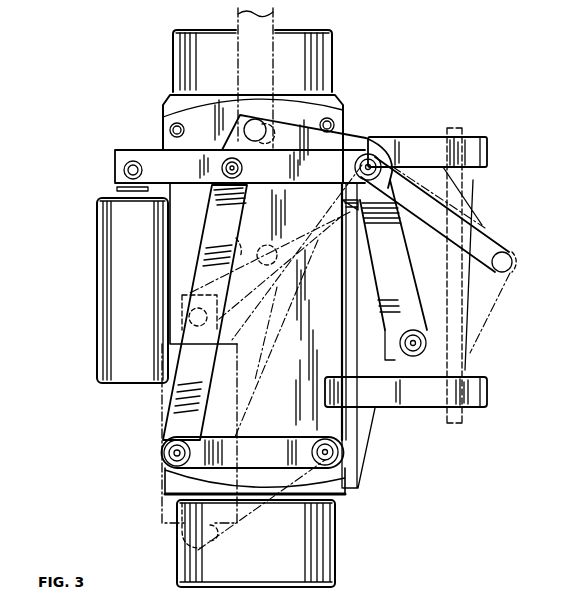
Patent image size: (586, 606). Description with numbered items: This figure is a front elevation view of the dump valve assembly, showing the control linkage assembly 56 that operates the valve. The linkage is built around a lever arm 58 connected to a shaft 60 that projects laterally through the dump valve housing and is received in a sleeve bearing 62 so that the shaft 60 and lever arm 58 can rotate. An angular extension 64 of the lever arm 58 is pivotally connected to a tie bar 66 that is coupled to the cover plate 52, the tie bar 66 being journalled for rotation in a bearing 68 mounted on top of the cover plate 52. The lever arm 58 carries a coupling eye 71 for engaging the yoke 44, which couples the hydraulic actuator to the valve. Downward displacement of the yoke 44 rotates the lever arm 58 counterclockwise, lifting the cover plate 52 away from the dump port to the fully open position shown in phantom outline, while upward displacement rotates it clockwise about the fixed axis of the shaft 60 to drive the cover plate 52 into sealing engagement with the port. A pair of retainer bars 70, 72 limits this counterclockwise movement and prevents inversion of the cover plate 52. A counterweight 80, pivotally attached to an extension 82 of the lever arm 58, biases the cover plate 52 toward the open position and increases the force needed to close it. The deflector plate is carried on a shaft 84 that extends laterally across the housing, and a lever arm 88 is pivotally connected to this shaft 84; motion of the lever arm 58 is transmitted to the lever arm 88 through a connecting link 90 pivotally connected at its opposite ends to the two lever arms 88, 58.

The yoke 44 is at (236, 14).
The cover plate 52 is at (472, 353).
The control linkage assembly 56 is at (398, 108).
The lever arm 58 is at (298, 135).
The shaft 60 is at (368, 135).
The sleeve bearing 62 is at (360, 170).
The angular extension 64 is at (485, 225).
The tie bar 66 is at (512, 273).
The bearing 68 is at (423, 330).
The retainer bar 70 is at (425, 142).
The coupling eye 71 is at (270, 140).
The retainer bar 72 is at (475, 408).
The counterweight 80 is at (108, 363).
The extension 82 is at (162, 153).
The deflector plate shaft 84 is at (338, 456).
The lever arm 88 is at (266, 458).
The connecting link 90 is at (233, 270).